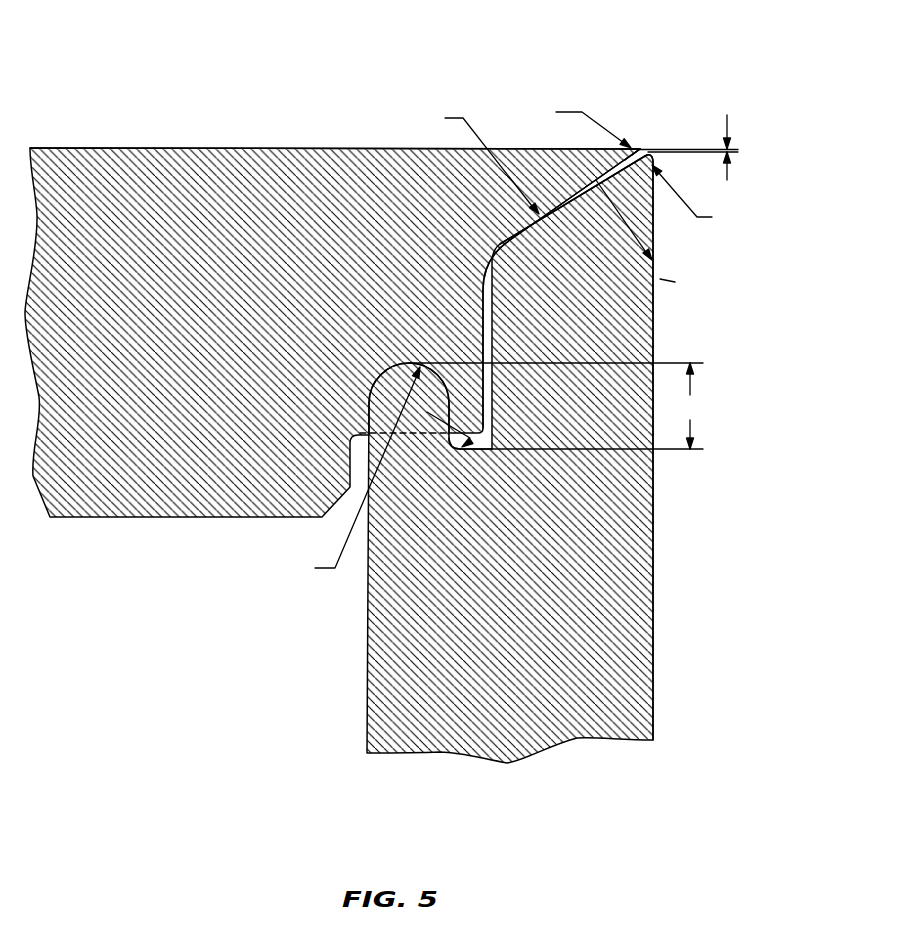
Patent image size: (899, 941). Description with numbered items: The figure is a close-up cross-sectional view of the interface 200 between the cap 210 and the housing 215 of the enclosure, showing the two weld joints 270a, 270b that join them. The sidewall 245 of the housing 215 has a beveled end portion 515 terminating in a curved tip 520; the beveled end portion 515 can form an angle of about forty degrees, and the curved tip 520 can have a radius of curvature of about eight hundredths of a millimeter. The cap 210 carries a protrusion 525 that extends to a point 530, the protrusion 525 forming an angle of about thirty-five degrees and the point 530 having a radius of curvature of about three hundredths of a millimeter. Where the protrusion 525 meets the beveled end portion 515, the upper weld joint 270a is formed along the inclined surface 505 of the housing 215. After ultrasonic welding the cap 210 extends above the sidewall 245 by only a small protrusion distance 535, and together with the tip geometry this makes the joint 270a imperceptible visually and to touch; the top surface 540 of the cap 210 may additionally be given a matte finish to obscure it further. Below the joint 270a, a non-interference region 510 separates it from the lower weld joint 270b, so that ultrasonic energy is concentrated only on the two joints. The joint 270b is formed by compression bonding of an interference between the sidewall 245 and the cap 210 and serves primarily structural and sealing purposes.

The joint assembly 200 is at (442, 384).
The cap 210 is at (247, 177).
The housing 215 is at (608, 628).
The sidewall 245 is at (617, 692).
The weld joint 270a is at (638, 149).
The weld joint 270b is at (478, 436).
The inclined surface of second member 505 is at (656, 256).
The non-interference region 510 is at (487, 293).
The beveled end portion 515 is at (598, 237).
The curved tip 520 is at (646, 148).
The protrusion 525 is at (507, 195).
The point 530 is at (638, 149).
The protrusion distance 535 is at (727, 115).
The top surface 540 is at (172, 148).